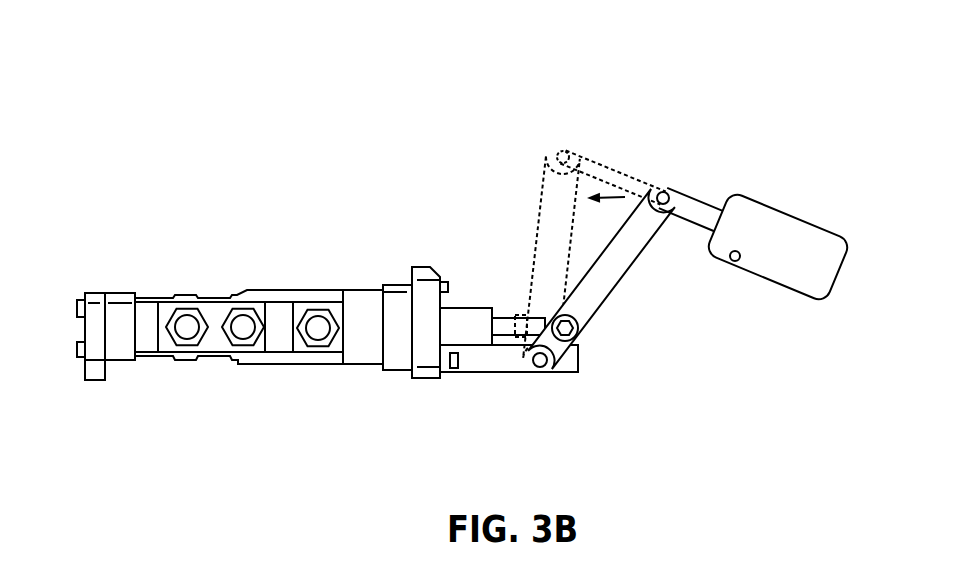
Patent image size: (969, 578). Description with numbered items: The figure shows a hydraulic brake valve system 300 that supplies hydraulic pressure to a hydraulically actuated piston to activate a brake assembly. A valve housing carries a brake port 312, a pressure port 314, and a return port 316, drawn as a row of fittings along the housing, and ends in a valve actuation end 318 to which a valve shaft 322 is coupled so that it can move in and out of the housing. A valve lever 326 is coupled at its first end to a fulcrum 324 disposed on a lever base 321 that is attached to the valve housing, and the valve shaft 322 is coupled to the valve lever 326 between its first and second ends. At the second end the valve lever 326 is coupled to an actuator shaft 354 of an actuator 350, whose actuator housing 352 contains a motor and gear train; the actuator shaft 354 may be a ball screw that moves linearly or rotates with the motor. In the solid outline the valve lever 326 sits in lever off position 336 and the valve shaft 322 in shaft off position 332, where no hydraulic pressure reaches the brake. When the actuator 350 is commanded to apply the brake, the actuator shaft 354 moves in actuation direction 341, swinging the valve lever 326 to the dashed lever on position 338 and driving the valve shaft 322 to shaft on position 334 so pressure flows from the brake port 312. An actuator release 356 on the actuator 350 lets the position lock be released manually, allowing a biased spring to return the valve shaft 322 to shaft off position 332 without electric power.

The hydraulic brake valve system 300 is at (196, 177).
The brake port 312 is at (186, 333).
The pressure port 314 is at (243, 333).
The return port 316 is at (318, 334).
The valve actuation end 318 is at (448, 310).
The lever base 321 is at (470, 367).
The valve shaft 322 is at (498, 331).
The fulcrum 324 is at (530, 370).
The valve lever 326 is at (613, 282).
The shaft off position 332 is at (552, 340).
The shaft on position 334 is at (511, 308).
The lever off position 336 is at (661, 173).
The lever on position 338 is at (531, 143).
The actuation direction 341 is at (613, 196).
The actuator 350 is at (755, 197).
The actuator housing 352 is at (775, 225).
The actuator shaft 354 is at (705, 212).
The actuator release 356 is at (735, 262).